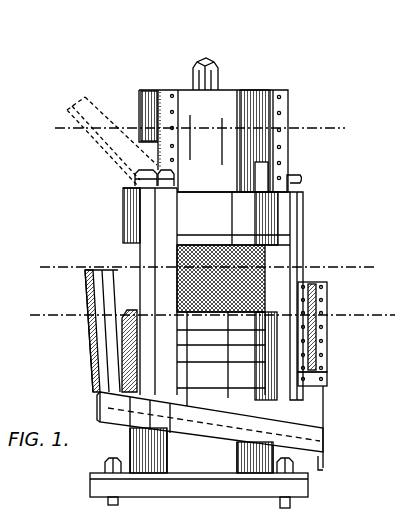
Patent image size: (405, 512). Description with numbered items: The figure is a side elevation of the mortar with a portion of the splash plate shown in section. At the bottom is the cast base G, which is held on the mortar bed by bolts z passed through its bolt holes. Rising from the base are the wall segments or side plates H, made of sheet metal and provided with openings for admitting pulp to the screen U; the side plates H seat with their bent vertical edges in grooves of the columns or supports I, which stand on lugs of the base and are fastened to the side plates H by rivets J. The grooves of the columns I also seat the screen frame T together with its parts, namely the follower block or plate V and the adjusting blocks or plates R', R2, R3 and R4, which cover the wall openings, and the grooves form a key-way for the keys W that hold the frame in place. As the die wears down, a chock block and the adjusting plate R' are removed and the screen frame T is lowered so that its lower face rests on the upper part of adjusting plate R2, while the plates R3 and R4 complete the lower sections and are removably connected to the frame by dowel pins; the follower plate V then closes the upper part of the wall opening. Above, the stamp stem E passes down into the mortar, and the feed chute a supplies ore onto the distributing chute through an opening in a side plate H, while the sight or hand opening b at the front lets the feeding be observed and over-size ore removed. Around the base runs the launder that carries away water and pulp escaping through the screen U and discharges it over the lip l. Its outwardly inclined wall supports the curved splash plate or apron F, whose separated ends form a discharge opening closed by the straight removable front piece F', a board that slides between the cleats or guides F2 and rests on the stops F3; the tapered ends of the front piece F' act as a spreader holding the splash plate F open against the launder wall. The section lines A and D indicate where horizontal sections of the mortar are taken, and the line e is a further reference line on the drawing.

The shaft / spindle E is at (205, 64).
The wall segments or side plates H is at (239, 98).
The columns or supports I is at (156, 94).
The rivets J is at (174, 97).
The section line A- A is at (193, 129).
The feed chute a is at (112, 141).
The sight or hand opening b is at (263, 172).
The keys W is at (133, 178).
The follower block or plate V is at (122, 203).
The screen frame T is at (122, 232).
The screen U is at (137, 258).
The section line D- D is at (207, 258).
The section line e- e is at (212, 311).
The curved splash plate or apron F is at (197, 371).
The removable front piece F' is at (327, 327).
The cleats or guides F2 is at (305, 303).
The stops F3 is at (318, 380).
The adjusting block or plate R' is at (221, 337).
The adjusting block or plate R2 is at (221, 352).
The adjusting block or plate R3 is at (221, 369).
The adjusting block or plate R4 is at (227, 359).
The lip l is at (325, 460).
The base G is at (203, 495).
The bolts z is at (292, 500).